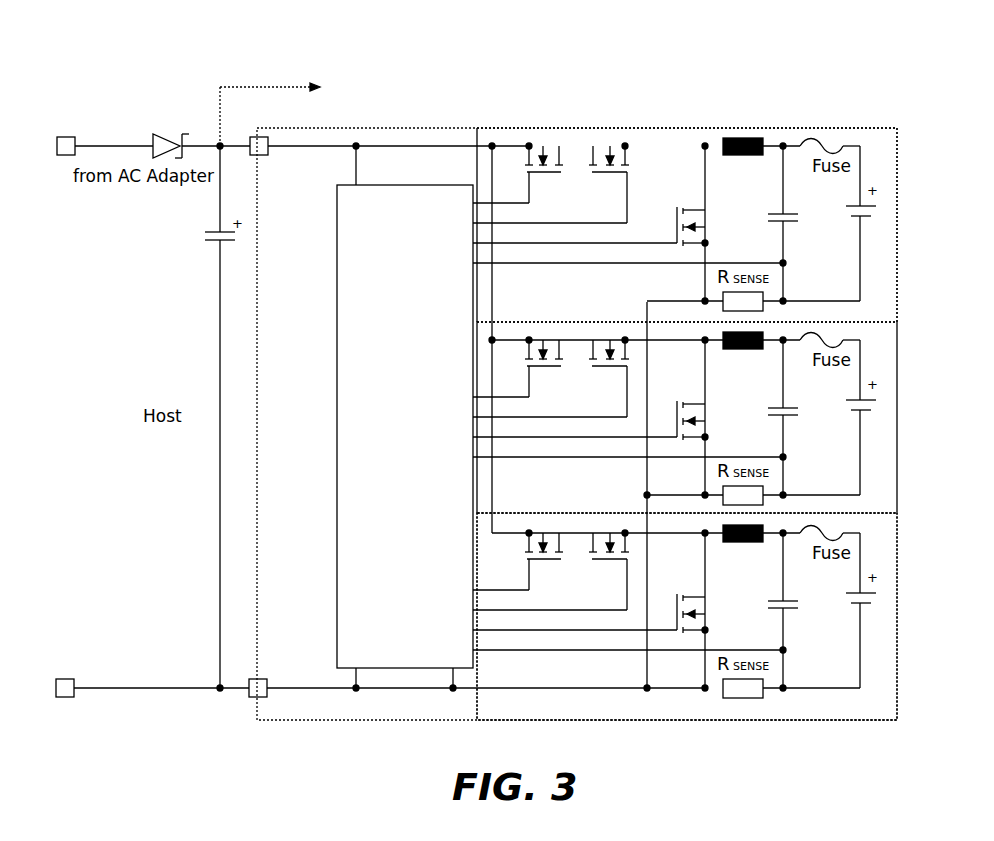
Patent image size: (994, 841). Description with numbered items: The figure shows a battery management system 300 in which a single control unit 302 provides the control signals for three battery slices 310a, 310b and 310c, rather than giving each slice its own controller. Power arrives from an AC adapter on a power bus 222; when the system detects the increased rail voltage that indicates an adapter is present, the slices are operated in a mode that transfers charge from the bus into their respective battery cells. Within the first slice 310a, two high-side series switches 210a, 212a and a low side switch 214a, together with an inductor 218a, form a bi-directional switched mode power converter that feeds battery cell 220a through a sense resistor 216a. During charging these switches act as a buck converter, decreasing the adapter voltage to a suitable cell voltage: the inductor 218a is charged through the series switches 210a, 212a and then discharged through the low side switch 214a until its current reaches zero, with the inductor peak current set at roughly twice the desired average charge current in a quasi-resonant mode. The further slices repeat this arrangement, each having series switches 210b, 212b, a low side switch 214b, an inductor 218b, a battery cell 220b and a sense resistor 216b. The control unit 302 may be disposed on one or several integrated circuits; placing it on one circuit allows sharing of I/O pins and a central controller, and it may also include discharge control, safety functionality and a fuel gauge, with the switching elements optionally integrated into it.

The battery management system 300 is at (168, 42).
The power bus 222 is at (259, 88).
The control unit 302 is at (337, 252).
The series switch 210a is at (540, 145).
The series switch 212a is at (615, 145).
The low side switch 214a is at (700, 206).
The inductor 218a is at (748, 155).
The battery cell 220a is at (843, 207).
The first sense resistor 216a is at (763, 304).
The slice 310a is at (687, 225).
The series switch 210b is at (518, 446).
The series switch 212b is at (551, 456).
The low side switch 214b is at (683, 501).
The inductor 218b is at (740, 454).
The battery cell 220b is at (835, 511).
The second sense resistor 216b is at (752, 590).
The slice 310b is at (687, 417).
The slice 310c is at (687, 616).